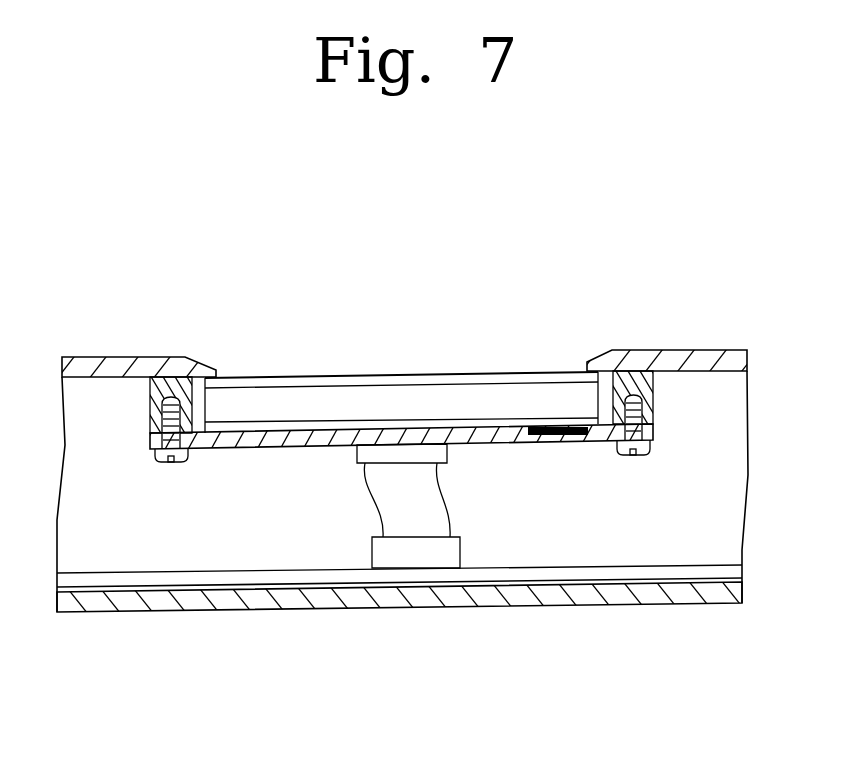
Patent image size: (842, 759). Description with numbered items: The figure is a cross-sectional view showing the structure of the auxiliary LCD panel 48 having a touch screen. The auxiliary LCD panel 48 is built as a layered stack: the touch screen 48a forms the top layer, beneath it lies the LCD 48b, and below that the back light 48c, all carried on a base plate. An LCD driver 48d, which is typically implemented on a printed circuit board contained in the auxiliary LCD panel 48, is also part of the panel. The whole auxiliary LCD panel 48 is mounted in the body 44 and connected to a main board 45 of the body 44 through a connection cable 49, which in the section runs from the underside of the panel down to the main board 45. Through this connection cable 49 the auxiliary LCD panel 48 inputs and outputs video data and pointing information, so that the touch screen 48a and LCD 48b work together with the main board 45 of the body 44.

The body 44 is at (514, 620).
The main board 45 is at (330, 598).
The auxiliary LCD panel 48 is at (405, 369).
The touch screen 48a is at (302, 376).
The LCD 48b is at (390, 398).
The back light 48c is at (482, 423).
The LCD driver 48d is at (552, 442).
The connection cable 49 is at (460, 495).